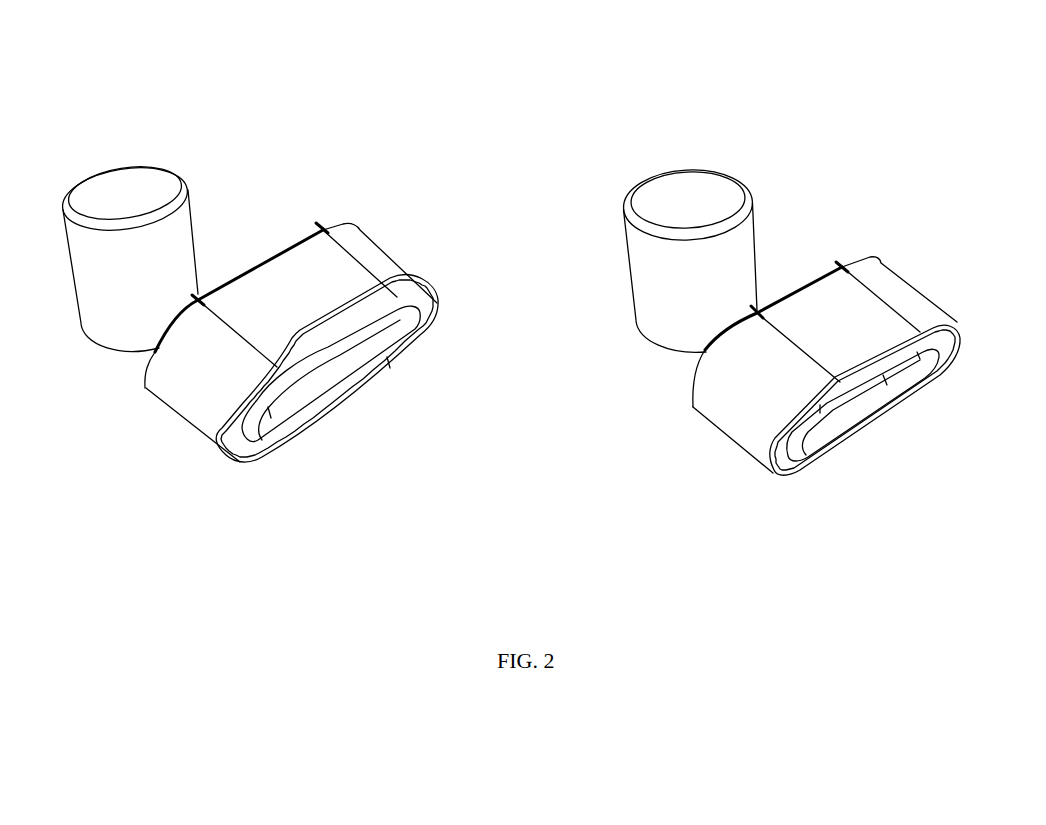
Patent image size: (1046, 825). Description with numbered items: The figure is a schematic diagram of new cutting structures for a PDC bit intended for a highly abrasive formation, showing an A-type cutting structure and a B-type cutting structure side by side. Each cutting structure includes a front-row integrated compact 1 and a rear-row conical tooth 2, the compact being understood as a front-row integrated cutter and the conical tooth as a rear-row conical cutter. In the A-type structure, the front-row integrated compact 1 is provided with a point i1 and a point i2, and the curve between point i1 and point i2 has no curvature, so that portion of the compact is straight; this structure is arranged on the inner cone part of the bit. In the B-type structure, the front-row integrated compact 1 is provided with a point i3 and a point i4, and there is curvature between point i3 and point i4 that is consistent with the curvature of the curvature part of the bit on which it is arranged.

The front-row integrated compact 1 is at (552, 420).
The rear-row conical tooth 2 is at (407, 176).
The point i1 is at (246, 215).
The point i2 is at (371, 160).
The point i3 is at (796, 216).
The point i4 is at (884, 176).